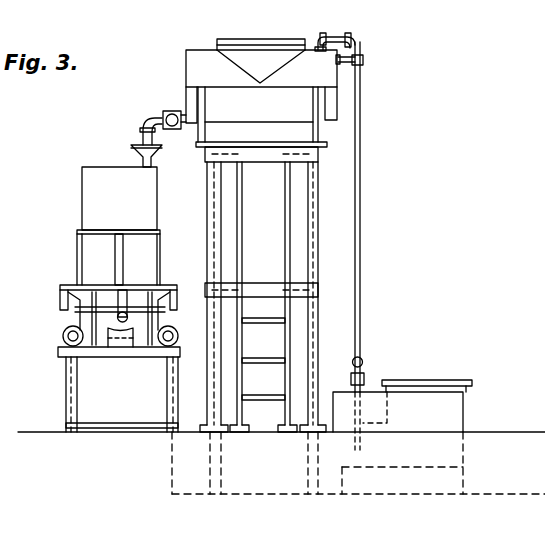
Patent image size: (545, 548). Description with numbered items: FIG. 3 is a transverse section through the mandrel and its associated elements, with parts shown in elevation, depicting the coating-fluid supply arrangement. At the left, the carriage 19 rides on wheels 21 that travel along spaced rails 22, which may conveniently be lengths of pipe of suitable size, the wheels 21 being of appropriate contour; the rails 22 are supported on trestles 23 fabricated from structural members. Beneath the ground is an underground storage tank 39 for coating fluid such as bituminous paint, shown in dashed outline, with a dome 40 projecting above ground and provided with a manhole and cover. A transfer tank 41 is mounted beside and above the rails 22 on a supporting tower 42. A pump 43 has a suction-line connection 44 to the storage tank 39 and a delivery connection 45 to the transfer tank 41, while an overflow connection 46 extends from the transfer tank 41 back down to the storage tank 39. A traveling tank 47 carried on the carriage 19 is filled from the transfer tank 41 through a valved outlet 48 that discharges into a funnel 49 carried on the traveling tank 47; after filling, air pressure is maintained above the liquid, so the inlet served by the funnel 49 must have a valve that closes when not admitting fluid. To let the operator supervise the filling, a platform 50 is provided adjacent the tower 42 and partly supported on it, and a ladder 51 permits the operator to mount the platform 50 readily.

The carriage 19 is at (75, 285).
The wheels 21 is at (67, 311).
The rails 22 is at (62, 344).
The trestles 23 is at (73, 393).
The underground storage tank 39 is at (170, 458).
The dome 40 is at (455, 405).
The transfer tank 41 is at (206, 62).
The supporting tower 42 is at (313, 183).
The pump 43 is at (388, 405).
The suction-line connection 44 is at (362, 445).
The delivery connection 45 is at (362, 46).
The overflow connection 46 is at (361, 105).
The traveling tank 47 is at (103, 200).
The valved outlet 48 is at (150, 120).
The funnel 49 is at (131, 150).
The platform 50 is at (295, 283).
The ladder 51 is at (290, 340).